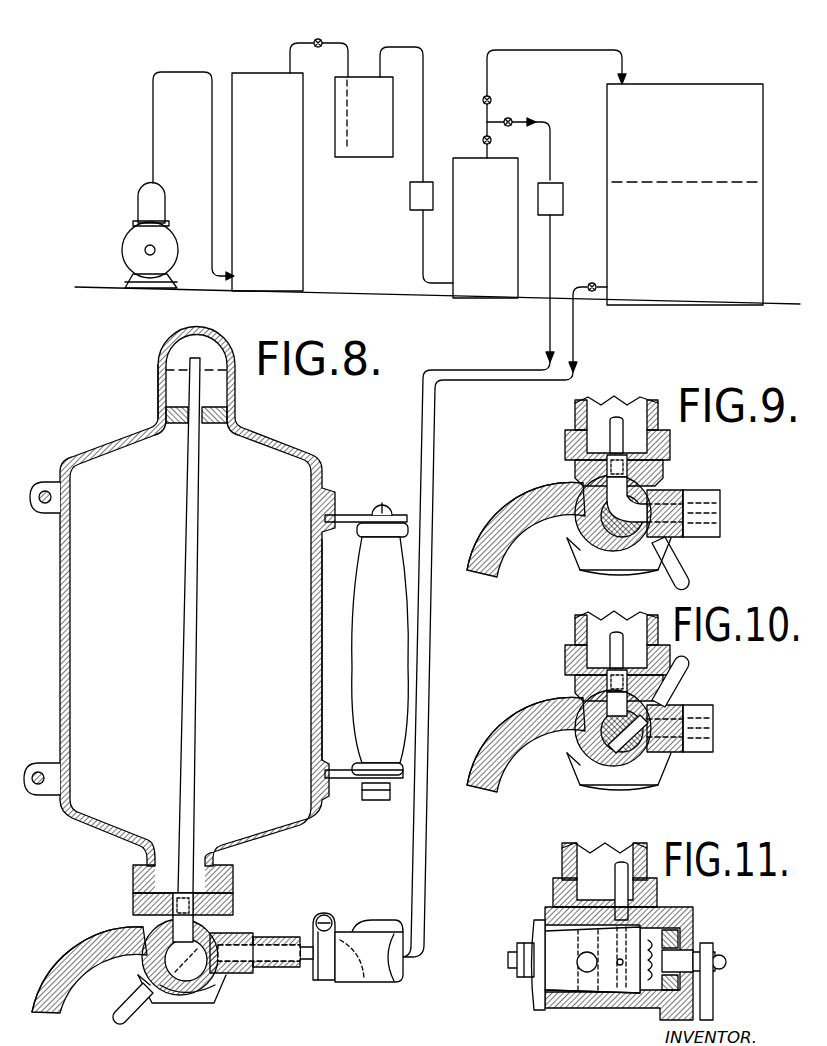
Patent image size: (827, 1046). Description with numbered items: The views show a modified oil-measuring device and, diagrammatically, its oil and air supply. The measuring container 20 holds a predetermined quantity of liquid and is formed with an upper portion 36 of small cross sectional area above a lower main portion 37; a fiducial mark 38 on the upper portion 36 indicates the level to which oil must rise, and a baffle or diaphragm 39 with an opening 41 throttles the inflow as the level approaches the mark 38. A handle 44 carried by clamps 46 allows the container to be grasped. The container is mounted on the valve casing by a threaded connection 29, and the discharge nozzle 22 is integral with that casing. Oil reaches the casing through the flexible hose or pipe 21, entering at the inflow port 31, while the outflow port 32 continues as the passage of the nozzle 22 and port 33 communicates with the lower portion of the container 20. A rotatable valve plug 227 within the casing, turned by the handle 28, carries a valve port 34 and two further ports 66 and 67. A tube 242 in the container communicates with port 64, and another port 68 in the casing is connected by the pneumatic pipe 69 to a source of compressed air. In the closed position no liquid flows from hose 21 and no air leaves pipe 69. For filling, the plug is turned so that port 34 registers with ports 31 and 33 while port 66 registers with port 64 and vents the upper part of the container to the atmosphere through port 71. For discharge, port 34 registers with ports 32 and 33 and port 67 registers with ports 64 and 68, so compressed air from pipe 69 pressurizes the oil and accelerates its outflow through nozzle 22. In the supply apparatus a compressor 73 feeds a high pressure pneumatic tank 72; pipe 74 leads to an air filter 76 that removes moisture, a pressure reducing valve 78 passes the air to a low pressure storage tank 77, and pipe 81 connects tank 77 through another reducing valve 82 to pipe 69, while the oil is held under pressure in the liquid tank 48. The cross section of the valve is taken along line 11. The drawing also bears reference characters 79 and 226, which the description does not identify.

In FIG. 8, the section line 11 is at (187, 838).
In FIG. 8, the measuring container 20 is at (302, 458).
In FIG. 9, the measuring container 20 is at (572, 408).
In FIG. 10, the measuring container 20 is at (598, 643).
In FIG. 11, the measuring container 20 is at (560, 862).
In FIG. 8, the flexible hose 21 is at (576, 323).
In FIG. 8, the discharge nozzle 22 is at (76, 956).
In FIG. 9, the discharge nozzle 22 is at (498, 520).
In FIG. 10, the discharge nozzle 22 is at (526, 744).
In FIG. 8, the valve handle 28 is at (113, 1014).
In FIG. 9, the valve handle 28 is at (686, 567).
In FIG. 10, the valve handle 28 is at (684, 681).
In FIG. 11, the valve handle 28 is at (714, 1013).
In FIG. 8, the threaded connection 29 is at (233, 872).
In FIG. 8, the inflow port 31 is at (250, 970).
In FIG. 9, the inflow port 31 is at (722, 498).
In FIG. 10, the inflow port 31 is at (685, 738).
In FIG. 8, the outflow port 32 is at (120, 936).
In FIG. 9, the outflow port 32 is at (530, 505).
In FIG. 10, the outflow port 32 is at (525, 737).
In FIG. 8, the port 33 is at (150, 902).
In FIG. 9, the port 33 is at (578, 463).
In FIG. 10, the port 33 is at (595, 678).
In FIG. 11, the port 33 is at (553, 908).
In FIG. 8, the valve port 34 is at (216, 987).
In FIG. 9, the valve port 34 is at (660, 500).
In FIG. 10, the valve port 34 is at (676, 705).
In FIG. 11, the valve port 34 is at (572, 972).
In FIG. 8, the upper portion 36 is at (158, 380).
In FIG. 8, the lower main portion 37 is at (298, 643).
In FIG. 8, the fiducial mark 38 is at (162, 362).
In FIG. 8, the diaphragm 39 is at (166, 413).
In FIG. 8, the opening 41 is at (227, 416).
In FIG. 8, the handle 44 is at (356, 708).
In FIG. 8, the clamps 46 is at (38, 764).
In FIG. 8, the liquid tank 48 is at (752, 255).
In FIG. 8, the port 64 is at (152, 913).
In FIG. 9, the port 64 is at (628, 470).
In FIG. 10, the port 64 is at (578, 681).
In FIG. 11, the port 64 is at (640, 912).
In FIG. 8, the valve plug port 66 is at (236, 916).
In FIG. 9, the valve plug port 66 is at (603, 570).
In FIG. 10, the valve plug port 66 is at (619, 781).
In FIG. 11, the valve plug port 66 is at (610, 952).
In FIG. 8, the valve plug port 67 is at (191, 1000).
In FIG. 9, the valve plug port 67 is at (632, 560).
In FIG. 10, the valve plug port 67 is at (659, 720).
In FIG. 11, the valve plug port 67 is at (615, 997).
In FIG. 8, the port 68 is at (240, 933).
In FIG. 9, the port 68 is at (722, 513).
In FIG. 10, the port 68 is at (700, 728).
In FIG. 11, the port 68 is at (683, 959).
In FIG. 8, the pneumatic pipe 69 is at (554, 258).
In FIG. 8, the vent port 71 is at (134, 979).
In FIG. 9, the vent port 71 is at (576, 552).
In FIG. 10, the vent port 71 is at (562, 776).
In FIG. 8, the high pressure pneumatic tank 72 is at (297, 203).
In FIG. 8, the compressor 73 is at (122, 239).
In FIG. 8, the pipe 74 is at (315, 41).
In FIG. 8, the air filter 76 is at (370, 148).
In FIG. 8, the low pressure storage tank 77 is at (458, 241).
In FIG. 8, the pressure reducing valve 78 is at (410, 201).
In FIG. 8, the return pipe 79 is at (572, 50).
In FIG. 8, the pipe 81 is at (554, 140).
In FIG. 8, the reducing valve 82 is at (565, 206).
In FIG. 8, the valve body portion 226 is at (242, 986).
In FIG. 9, the valve body portion 226 is at (665, 538).
In FIG. 11, the valve body portion 226 is at (546, 913).
In FIG. 8, the valve plug 227 is at (162, 996).
In FIG. 9, the valve plug 227 is at (572, 470).
In FIG. 10, the valve plug 227 is at (630, 740).
In FIG. 11, the valve plug 227 is at (570, 1002).
In FIG. 8, the tube 242 is at (186, 595).
In FIG. 9, the tube 242 is at (608, 428).
In FIG. 10, the tube 242 is at (568, 650).
In FIG. 11, the tube 242 is at (614, 882).